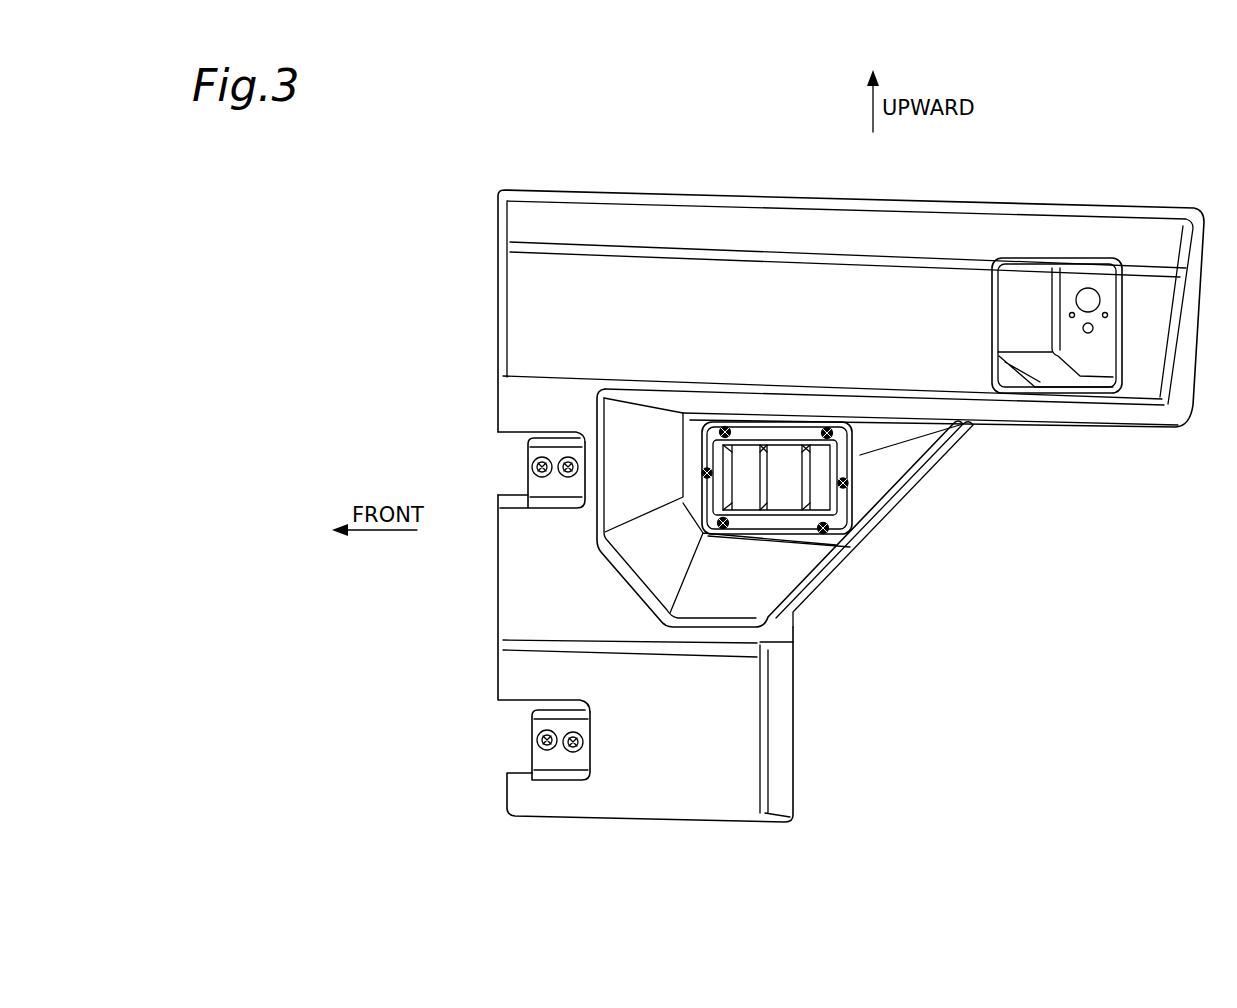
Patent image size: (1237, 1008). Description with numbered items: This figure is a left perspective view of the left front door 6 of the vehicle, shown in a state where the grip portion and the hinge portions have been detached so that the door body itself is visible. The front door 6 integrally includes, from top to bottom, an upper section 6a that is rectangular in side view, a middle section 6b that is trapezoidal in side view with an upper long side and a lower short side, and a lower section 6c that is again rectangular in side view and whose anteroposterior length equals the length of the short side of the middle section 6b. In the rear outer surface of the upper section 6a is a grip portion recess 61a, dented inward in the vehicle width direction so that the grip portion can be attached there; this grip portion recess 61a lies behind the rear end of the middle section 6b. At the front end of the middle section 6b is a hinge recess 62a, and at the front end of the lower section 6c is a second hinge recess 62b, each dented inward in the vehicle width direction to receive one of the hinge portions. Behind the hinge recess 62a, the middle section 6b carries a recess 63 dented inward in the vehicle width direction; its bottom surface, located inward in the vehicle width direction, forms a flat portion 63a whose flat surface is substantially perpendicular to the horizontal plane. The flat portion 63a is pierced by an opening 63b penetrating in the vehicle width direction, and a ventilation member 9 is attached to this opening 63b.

The front door 6 is at (1152, 176).
The upper section 6a is at (807, 285).
The middle section 6b is at (650, 540).
The lower section 6c is at (687, 727).
The grip portion recess 61a is at (1045, 293).
The hinge recess 62a is at (552, 448).
The hinge recess 62b is at (558, 753).
The recess 63 is at (872, 540).
The flat portion 63a is at (892, 465).
The opening 63b is at (855, 495).
The ventilation member 9 is at (772, 528).